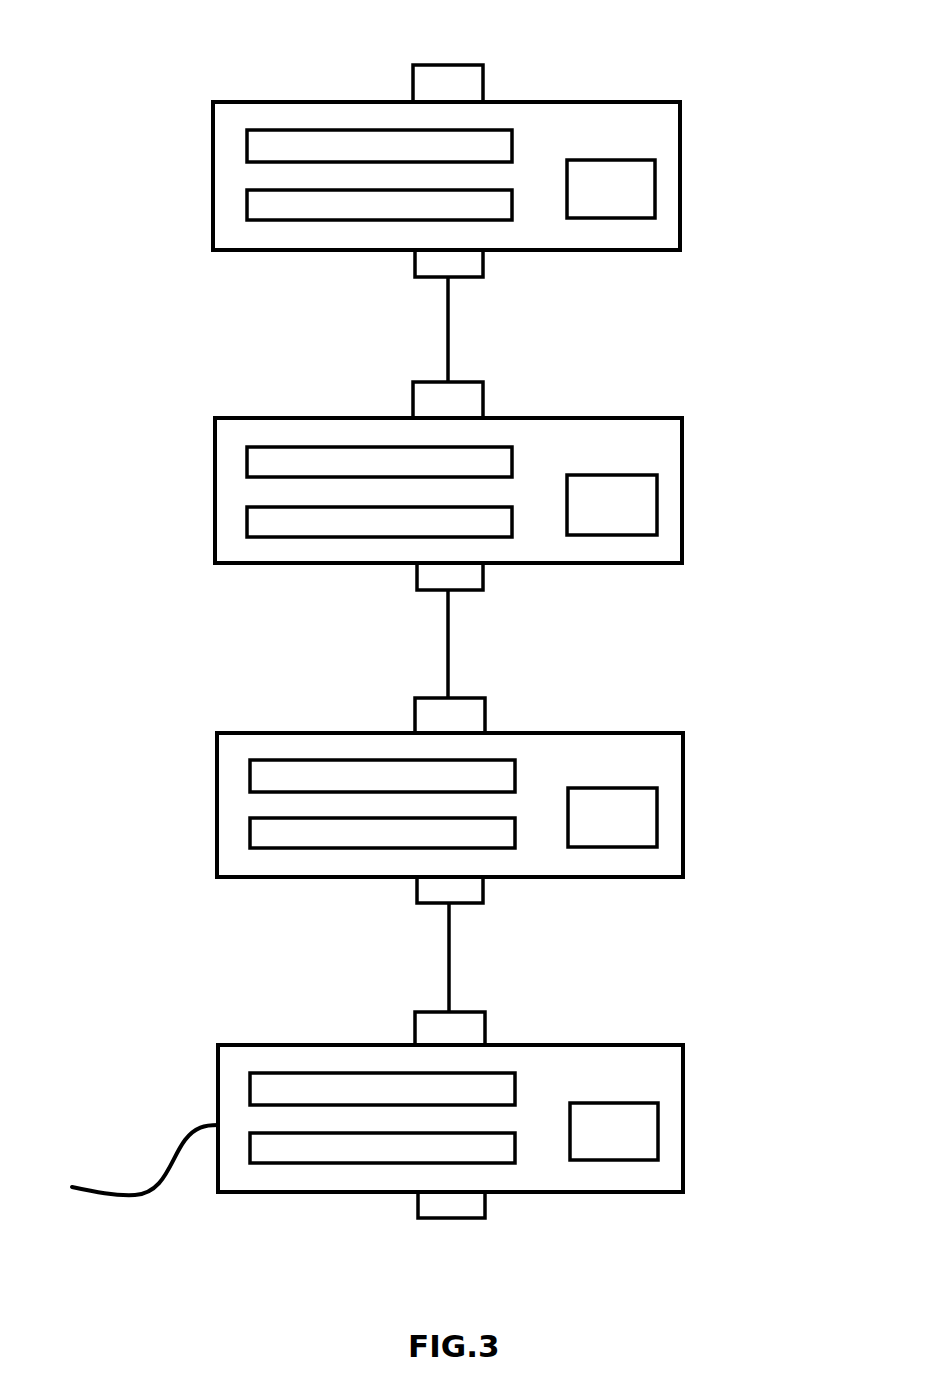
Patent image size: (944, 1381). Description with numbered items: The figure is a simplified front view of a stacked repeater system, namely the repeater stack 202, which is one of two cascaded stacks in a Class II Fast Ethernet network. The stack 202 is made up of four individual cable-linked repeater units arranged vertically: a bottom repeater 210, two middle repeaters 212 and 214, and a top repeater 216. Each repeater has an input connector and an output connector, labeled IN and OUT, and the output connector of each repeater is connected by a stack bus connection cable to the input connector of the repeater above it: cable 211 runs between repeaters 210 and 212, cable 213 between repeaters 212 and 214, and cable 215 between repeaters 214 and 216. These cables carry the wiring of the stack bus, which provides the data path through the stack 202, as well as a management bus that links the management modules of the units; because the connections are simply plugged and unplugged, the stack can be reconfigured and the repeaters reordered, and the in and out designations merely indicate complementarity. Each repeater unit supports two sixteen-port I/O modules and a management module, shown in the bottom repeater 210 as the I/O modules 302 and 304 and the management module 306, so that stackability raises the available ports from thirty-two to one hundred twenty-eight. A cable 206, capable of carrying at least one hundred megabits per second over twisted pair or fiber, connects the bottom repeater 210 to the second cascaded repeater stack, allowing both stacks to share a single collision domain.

The repeater stack 202 is at (752, 68).
The cable 206 is at (123, 1195).
The bottom repeater 210 is at (489, 1115).
The stack bus connection cable 211 is at (449, 955).
The middle repeater 212 is at (683, 820).
The stack bus connection cable 213 is at (448, 643).
The middle repeater 214 is at (682, 508).
The stack bus connection cable 215 is at (448, 318).
The top repeater 216 is at (680, 193).
The I/O module 302 is at (515, 1093).
The I/O module 304 is at (515, 1145).
The management module 306 is at (592, 1102).